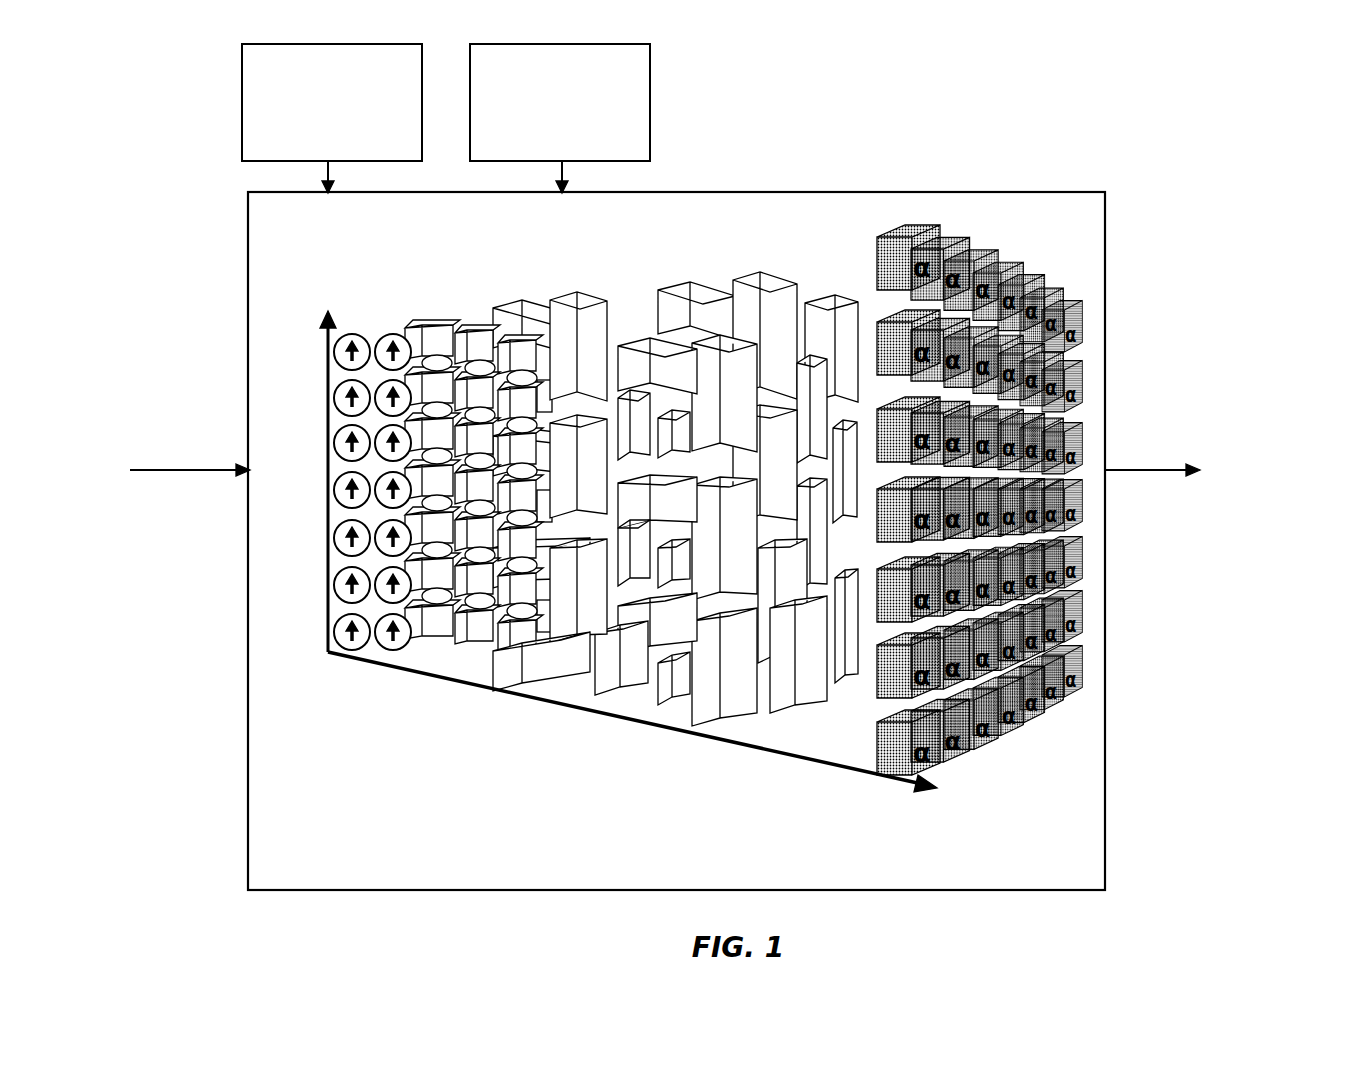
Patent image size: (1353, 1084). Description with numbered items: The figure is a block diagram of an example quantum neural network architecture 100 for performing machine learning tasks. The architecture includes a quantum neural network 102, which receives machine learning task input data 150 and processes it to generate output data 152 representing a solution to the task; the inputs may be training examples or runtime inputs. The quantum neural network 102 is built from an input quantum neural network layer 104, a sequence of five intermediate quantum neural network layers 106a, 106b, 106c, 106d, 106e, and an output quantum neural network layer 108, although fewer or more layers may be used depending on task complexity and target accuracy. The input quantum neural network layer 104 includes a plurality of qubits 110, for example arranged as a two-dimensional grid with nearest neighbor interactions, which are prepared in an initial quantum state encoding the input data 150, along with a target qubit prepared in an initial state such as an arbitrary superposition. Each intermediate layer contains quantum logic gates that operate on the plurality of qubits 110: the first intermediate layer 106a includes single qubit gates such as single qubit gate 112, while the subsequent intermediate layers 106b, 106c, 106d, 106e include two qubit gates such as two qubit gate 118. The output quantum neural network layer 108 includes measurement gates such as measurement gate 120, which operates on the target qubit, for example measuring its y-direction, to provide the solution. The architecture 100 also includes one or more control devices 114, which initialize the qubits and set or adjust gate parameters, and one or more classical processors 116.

The quantum neural network architecture 100 is at (172, 86).
The quantum neural network 102 is at (676, 541).
The input quantum neural network layer 104 is at (338, 657).
The first intermediate quantum neural network layer 106a is at (442, 500).
The intermediate quantum neural network layer 106b is at (494, 688).
The intermediate quantum neural network layer 106c is at (569, 499).
The intermediate quantum neural network layer 106d is at (640, 725).
The intermediate quantum neural network layer 106e is at (710, 745).
The output quantum neural network layer 108 is at (884, 786).
The plurality of qubits 110 is at (376, 322).
The single qubit gate 112 is at (445, 333).
The control devices 114 is at (332, 102).
The classical processors 116 is at (560, 102).
The two qubit gate 118 is at (578, 298).
The measurement gate 120 is at (1030, 282).
The input data 150 is at (168, 422).
The output data 152 is at (1208, 422).